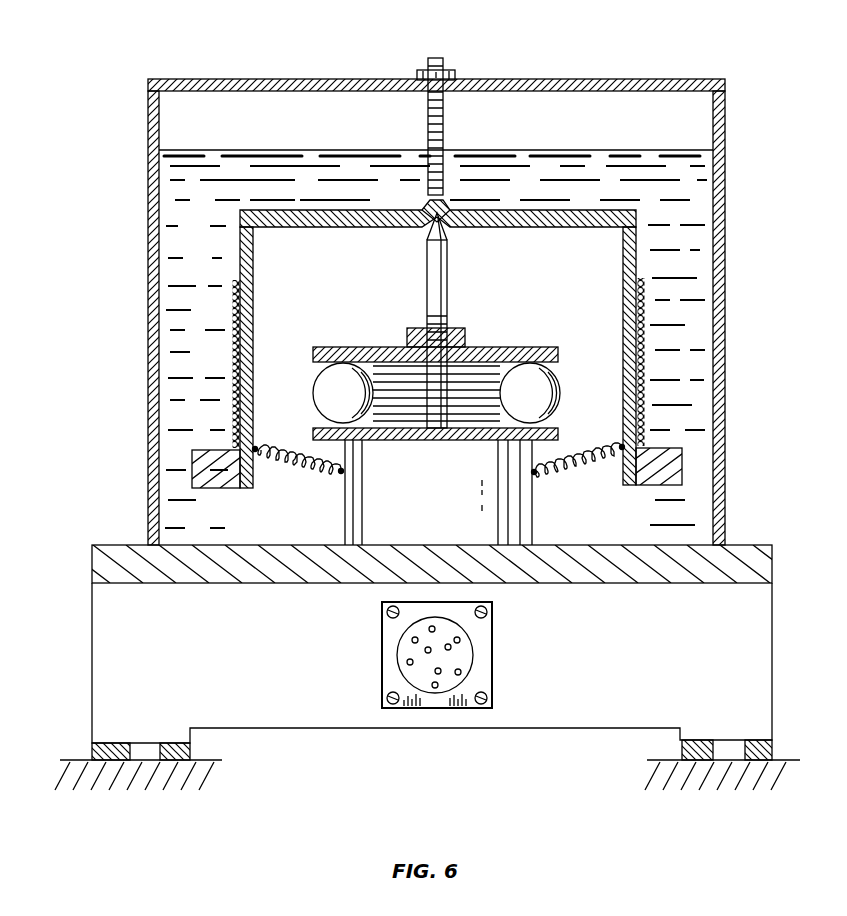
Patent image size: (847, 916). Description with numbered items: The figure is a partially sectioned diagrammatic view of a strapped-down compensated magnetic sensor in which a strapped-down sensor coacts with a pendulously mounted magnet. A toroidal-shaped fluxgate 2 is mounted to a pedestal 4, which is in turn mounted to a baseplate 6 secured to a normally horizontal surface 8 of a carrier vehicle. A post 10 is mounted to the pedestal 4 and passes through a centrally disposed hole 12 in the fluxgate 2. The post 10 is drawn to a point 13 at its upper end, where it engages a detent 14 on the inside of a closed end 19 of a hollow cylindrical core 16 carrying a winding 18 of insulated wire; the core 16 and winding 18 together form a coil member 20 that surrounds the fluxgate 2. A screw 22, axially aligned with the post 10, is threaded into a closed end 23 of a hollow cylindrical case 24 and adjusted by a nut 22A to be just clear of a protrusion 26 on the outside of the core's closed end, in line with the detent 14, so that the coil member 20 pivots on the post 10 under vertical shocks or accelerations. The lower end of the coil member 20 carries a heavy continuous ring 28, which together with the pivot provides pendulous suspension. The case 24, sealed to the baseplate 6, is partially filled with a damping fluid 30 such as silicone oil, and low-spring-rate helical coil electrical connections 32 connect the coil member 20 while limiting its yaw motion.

The fluxgate 2 is at (560, 395).
The pedestal 4 is at (533, 526).
The baseplate 6 is at (772, 647).
The normally horizontal surface 8 is at (128, 790).
The post 10 is at (447, 298).
The centrally disposed hole 12 is at (446, 398).
The point 13 is at (441, 225).
The detent 14 is at (430, 216).
The hollow cylindrical core 16 is at (636, 258).
The winding 18 is at (636, 365).
The closed end 19 is at (565, 210).
The coil member 20 is at (212, 262).
The screw 22 is at (445, 123).
The nut 22A is at (449, 68).
The closed end 23 is at (504, 80).
The hollow cylindrical case 24 is at (466, 294).
The protrusion 26 is at (452, 212).
The heavy continuous ring 28 is at (658, 487).
The fluid 30 is at (604, 150).
The helical coil electrical connections 32 is at (318, 470).